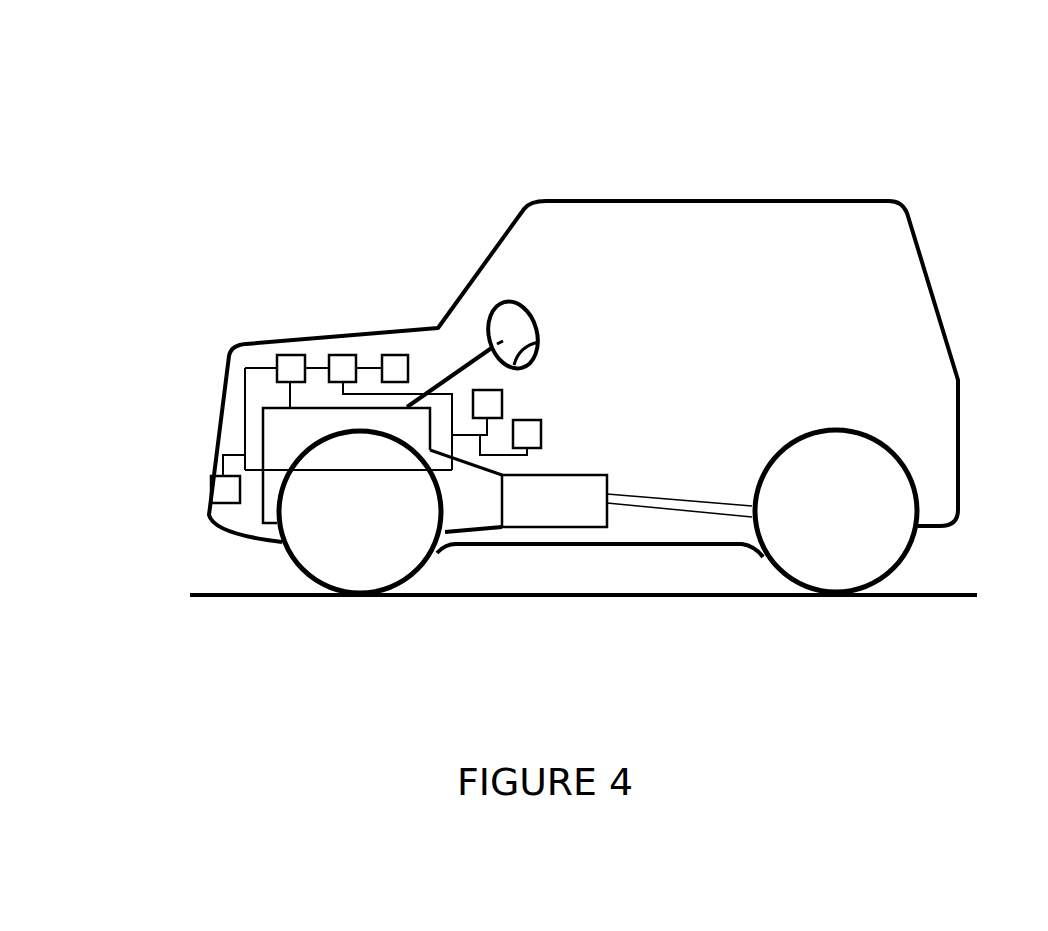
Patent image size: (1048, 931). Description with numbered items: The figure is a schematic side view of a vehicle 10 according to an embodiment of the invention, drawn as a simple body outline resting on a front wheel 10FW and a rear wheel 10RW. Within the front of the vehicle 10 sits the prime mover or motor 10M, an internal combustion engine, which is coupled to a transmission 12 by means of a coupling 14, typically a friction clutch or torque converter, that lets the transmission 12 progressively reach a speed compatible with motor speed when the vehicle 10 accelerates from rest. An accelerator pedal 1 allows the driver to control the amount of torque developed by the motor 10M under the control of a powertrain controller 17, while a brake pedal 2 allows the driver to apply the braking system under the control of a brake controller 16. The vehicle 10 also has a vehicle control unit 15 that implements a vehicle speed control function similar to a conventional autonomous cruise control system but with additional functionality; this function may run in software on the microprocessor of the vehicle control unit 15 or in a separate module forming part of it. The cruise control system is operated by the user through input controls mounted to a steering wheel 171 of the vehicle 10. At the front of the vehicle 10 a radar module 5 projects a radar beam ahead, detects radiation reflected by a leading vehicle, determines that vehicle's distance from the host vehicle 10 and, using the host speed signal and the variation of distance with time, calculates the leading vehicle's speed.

The accelerator pedal 1 is at (528, 438).
The brake pedal 2 is at (502, 400).
The radar module 5 is at (217, 491).
The vehicle 10 is at (432, 270).
The motor 10M is at (277, 421).
The front wheel 10FW is at (332, 560).
The rear wheel 10RW is at (850, 562).
The transmission 12 is at (580, 508).
The coupling 14 is at (475, 508).
The vehicle control unit 15 is at (388, 362).
The brake controller 16 is at (343, 361).
The powertrain controller 17 is at (288, 362).
The steering wheel 171 is at (528, 312).